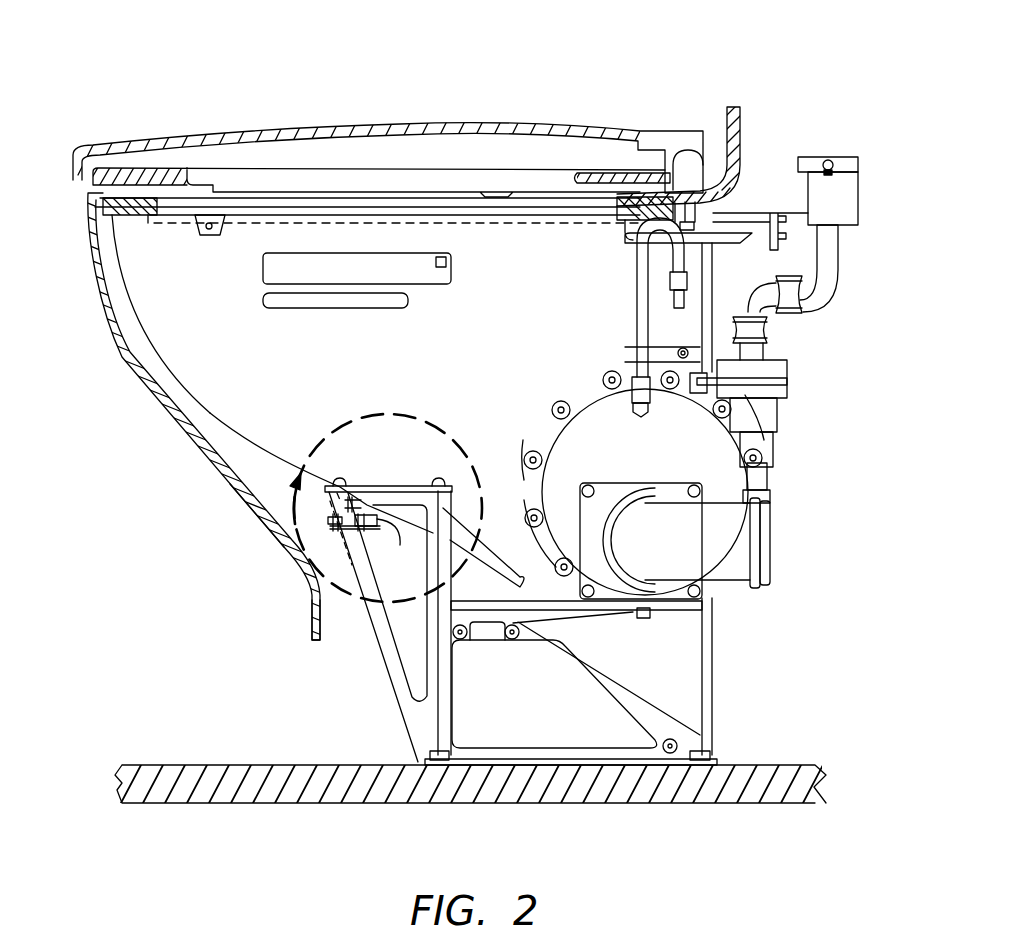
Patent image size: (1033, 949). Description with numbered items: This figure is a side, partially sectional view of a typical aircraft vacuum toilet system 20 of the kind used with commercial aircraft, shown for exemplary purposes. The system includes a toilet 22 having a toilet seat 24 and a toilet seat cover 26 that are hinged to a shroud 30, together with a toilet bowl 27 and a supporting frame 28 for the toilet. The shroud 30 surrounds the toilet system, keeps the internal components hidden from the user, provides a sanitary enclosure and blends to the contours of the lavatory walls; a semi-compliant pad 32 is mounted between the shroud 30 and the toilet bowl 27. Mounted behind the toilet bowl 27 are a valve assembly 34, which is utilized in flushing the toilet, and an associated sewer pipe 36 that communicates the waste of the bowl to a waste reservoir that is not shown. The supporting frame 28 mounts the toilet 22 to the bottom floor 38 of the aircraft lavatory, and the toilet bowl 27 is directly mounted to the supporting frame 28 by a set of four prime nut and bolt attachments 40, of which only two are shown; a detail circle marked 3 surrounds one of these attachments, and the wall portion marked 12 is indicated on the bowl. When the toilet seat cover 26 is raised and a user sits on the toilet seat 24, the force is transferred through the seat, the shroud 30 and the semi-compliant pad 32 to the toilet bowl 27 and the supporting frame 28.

The aircraft vacuum toilet system 20 is at (622, 113).
The semi-compliant pad 32 is at (122, 204).
The toilet seat cover 26 is at (268, 130).
The toilet seat 24 is at (423, 167).
The toilet 22 is at (195, 340).
The toilet bowl 27 is at (258, 452).
The bowl wall 12 is at (312, 540).
The shroud 30 is at (312, 628).
The prime nut and bolt attachments 40 is at (440, 480).
The detail of FIG. 3 is at (385, 414).
The supporting frame 28 is at (396, 707).
The valve assembly 34 is at (683, 457).
The sewer pipe 36 is at (723, 558).
The bottom floor 38 is at (707, 793).